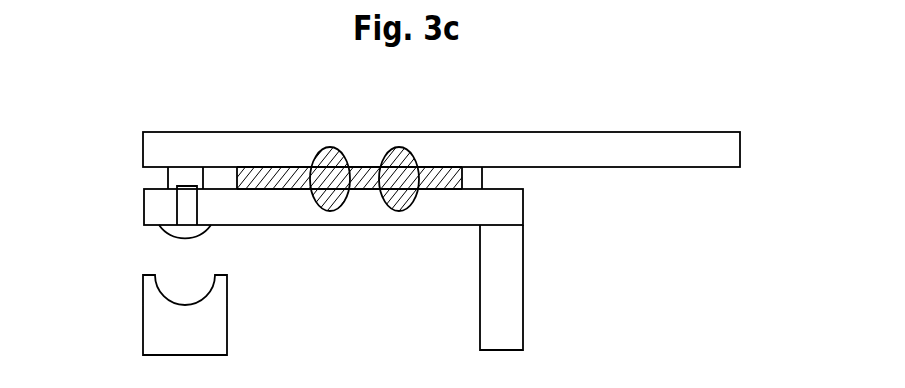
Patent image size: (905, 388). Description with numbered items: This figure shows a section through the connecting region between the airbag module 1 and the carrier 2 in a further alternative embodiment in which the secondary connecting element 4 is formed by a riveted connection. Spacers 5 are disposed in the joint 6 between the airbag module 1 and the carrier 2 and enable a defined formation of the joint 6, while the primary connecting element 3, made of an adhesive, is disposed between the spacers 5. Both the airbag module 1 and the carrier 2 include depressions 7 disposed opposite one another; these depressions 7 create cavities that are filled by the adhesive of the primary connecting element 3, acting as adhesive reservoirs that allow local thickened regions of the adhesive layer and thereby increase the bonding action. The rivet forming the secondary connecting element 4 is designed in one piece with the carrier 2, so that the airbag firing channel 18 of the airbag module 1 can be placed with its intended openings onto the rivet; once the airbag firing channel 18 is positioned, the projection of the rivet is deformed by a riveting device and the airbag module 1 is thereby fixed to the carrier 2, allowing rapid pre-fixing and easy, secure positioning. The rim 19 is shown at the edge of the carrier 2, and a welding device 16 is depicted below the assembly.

The airbag module 1 is at (607, 270).
The carrier 2 is at (527, 150).
The primary connecting element 3 is at (276, 172).
The secondary connecting element 4 is at (180, 233).
The spacer 5 is at (180, 176).
The joint 6 is at (500, 177).
The depressions 7 is at (330, 160).
The welding device 16 is at (160, 332).
The airbag firing channel 18 is at (508, 272).
The rim 19 is at (438, 207).